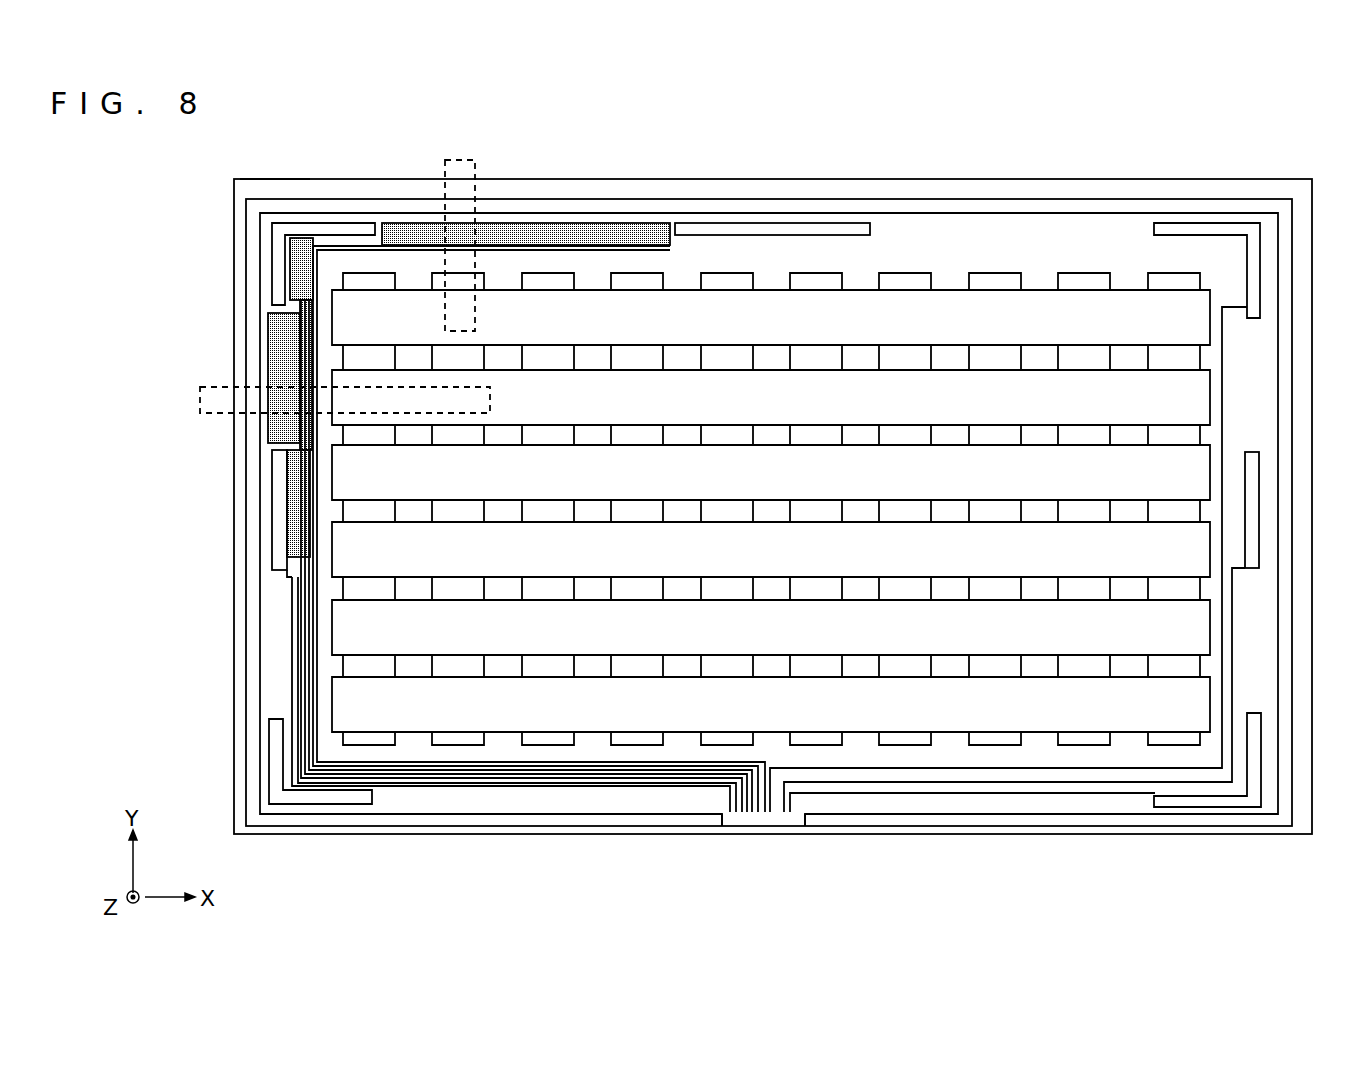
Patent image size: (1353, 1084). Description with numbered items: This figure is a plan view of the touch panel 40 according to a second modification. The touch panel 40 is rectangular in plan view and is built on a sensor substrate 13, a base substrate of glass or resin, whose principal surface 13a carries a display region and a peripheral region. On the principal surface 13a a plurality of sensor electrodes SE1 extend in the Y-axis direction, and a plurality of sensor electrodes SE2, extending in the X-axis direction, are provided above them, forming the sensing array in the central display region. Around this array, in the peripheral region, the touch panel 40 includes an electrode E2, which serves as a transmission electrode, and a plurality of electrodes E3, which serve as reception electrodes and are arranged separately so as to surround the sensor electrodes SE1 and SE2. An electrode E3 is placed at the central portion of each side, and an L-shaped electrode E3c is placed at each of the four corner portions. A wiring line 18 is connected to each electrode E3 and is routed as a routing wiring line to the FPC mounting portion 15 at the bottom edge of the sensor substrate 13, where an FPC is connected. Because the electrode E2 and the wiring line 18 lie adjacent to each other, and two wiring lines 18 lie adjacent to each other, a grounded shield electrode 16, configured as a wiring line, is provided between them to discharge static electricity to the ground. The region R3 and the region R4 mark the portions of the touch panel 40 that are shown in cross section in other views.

The touch panel 40 is at (1297, 152).
The sensor substrate 13 is at (235, 193).
The principal surface 13a is at (268, 188).
The FPC mounting portion 15 is at (805, 836).
The shield electrode 16 is at (605, 222).
The wiring line 18 is at (660, 245).
The electrode E2 is at (568, 198).
The electrode E3 is at (773, 222).
The electrode E3c is at (271, 266).
The sensor electrode SE1 is at (455, 271).
The sensor electrode SE2 is at (507, 303).
The region R3 is at (443, 160).
The region R4 is at (200, 385).